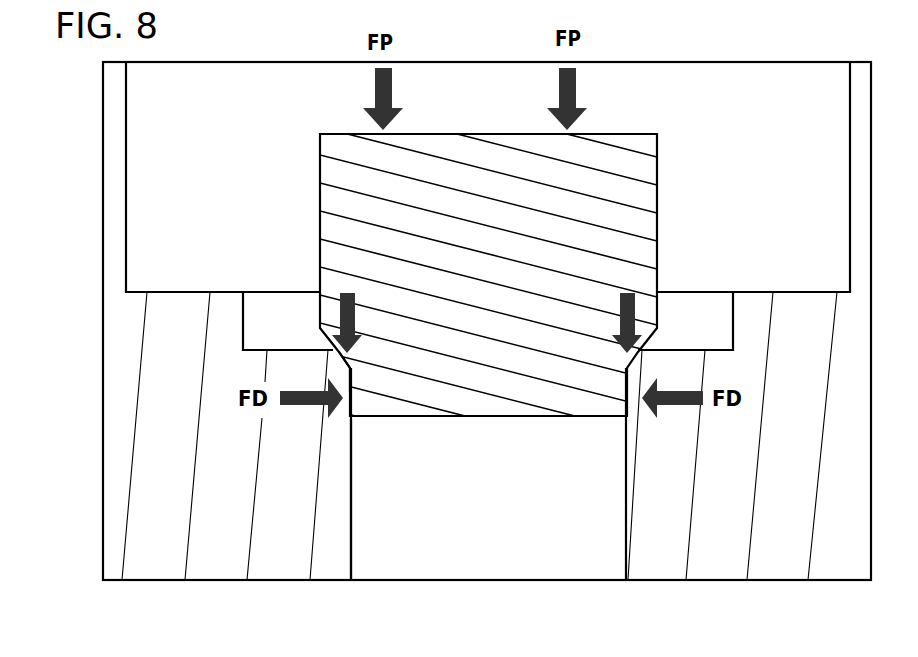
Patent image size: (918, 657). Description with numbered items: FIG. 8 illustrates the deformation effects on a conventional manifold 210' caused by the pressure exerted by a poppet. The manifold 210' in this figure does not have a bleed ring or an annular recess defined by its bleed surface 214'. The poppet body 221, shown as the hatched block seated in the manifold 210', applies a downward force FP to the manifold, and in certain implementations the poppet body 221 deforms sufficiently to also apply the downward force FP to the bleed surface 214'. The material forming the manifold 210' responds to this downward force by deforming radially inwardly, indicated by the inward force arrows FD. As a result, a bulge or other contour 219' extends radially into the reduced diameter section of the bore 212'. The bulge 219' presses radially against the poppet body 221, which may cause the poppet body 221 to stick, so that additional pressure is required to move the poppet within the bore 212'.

The poppet body 221 is at (638, 199).
The bleed surface 214' is at (488, 206).
The manifold 210' is at (435, 436).
The bulge 219' is at (413, 409).
The bore 212' is at (382, 500).